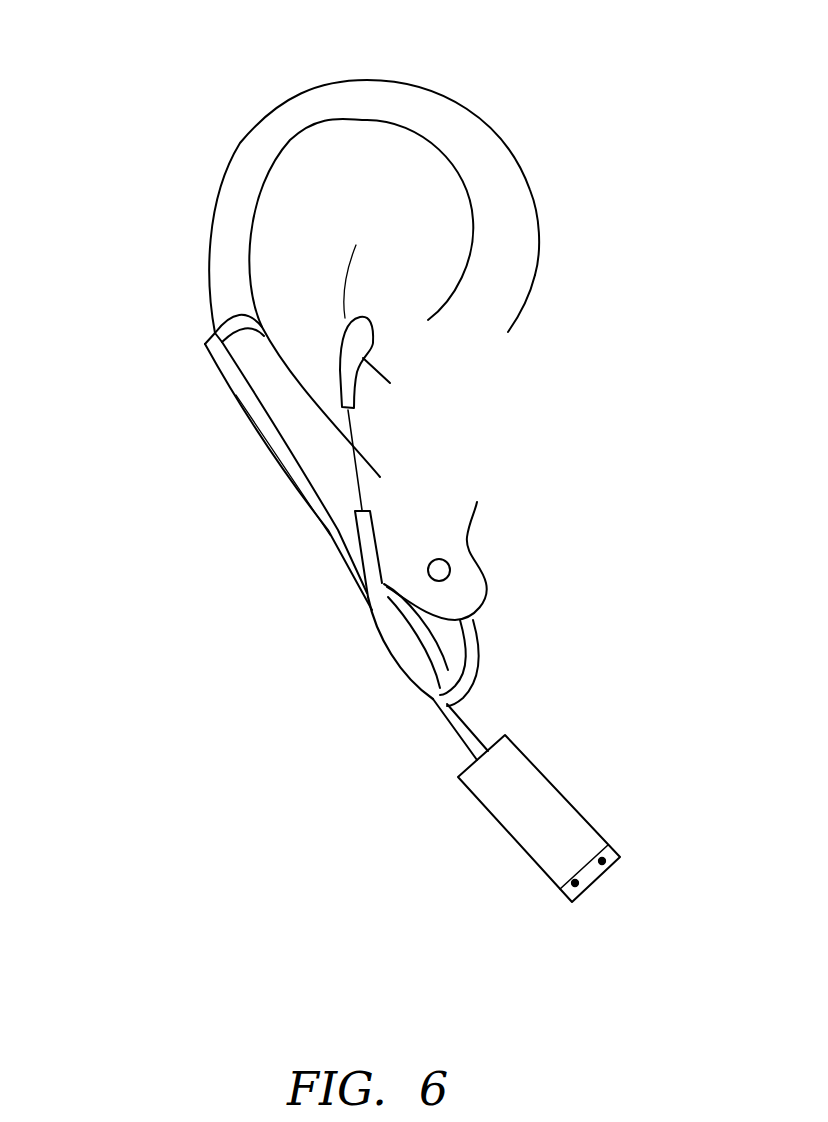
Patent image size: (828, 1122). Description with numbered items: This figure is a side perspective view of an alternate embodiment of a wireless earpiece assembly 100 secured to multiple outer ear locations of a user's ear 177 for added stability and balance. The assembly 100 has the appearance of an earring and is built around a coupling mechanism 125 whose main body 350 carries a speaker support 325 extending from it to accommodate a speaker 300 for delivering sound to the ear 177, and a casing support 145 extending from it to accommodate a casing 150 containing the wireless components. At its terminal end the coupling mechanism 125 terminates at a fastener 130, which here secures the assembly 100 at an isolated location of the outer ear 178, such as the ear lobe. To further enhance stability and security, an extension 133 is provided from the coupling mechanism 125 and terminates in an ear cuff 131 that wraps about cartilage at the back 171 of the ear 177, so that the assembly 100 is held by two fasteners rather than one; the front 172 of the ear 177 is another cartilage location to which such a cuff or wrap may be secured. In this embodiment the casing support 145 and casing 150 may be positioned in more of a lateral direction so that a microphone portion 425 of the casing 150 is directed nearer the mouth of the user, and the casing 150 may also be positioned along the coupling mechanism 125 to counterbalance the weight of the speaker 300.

The wireless earpiece assembly 100 is at (273, 598).
The coupling mechanism 125 is at (381, 662).
The fastener 130 is at (450, 566).
The ear cuff 131 is at (232, 328).
The extension 133 is at (313, 498).
The casing support 145 is at (443, 713).
The casing 150 is at (469, 825).
The back of the ear 171 is at (222, 231).
The front of the ear 172 is at (507, 283).
The ear 177 is at (330, 193).
The outer ear 178 is at (340, 102).
The speaker 300 is at (355, 343).
The speaker support 325 is at (360, 477).
The main body 350 is at (477, 657).
The microphone portion 425 is at (610, 847).